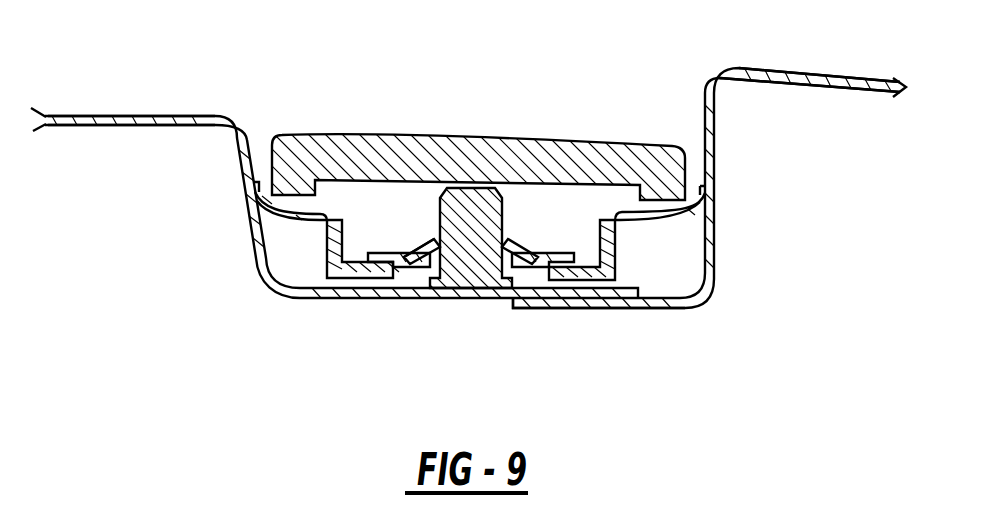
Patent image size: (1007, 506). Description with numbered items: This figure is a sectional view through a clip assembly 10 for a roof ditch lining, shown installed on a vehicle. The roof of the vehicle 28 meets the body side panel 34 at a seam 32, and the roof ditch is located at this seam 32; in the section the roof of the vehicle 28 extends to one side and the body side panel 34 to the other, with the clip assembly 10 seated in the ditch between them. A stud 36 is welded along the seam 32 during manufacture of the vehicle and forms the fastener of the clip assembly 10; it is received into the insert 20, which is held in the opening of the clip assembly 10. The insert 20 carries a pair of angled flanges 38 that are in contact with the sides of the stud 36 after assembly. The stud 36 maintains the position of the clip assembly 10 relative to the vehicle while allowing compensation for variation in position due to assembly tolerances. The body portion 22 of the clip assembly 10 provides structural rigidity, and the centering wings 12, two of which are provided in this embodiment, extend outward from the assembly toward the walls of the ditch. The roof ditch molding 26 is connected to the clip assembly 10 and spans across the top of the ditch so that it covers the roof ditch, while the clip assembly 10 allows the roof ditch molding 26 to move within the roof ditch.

The clip assembly 10 is at (644, 260).
The centering wing 12 is at (281, 213).
The insert 20 is at (405, 258).
The body portion 22 is at (362, 270).
The roof ditch molding 26 is at (552, 163).
The roof of a vehicle 28 is at (143, 127).
The seam 32 is at (512, 304).
The body side panel 34 is at (847, 82).
The stud 36 is at (470, 210).
The angled flanges 38 is at (515, 255).